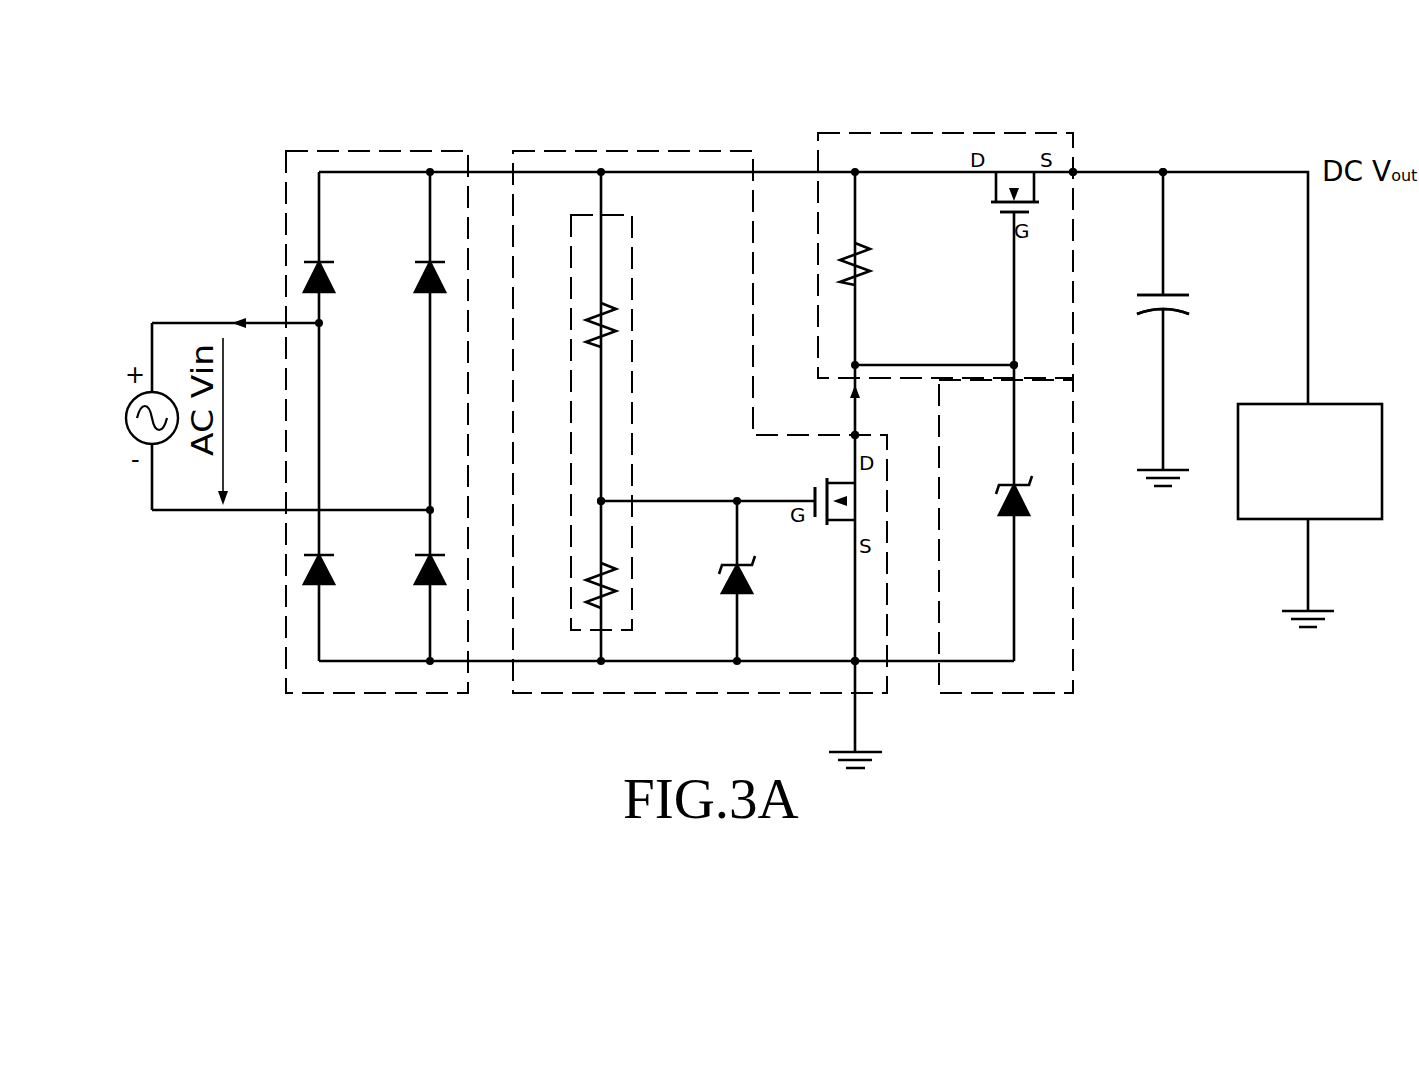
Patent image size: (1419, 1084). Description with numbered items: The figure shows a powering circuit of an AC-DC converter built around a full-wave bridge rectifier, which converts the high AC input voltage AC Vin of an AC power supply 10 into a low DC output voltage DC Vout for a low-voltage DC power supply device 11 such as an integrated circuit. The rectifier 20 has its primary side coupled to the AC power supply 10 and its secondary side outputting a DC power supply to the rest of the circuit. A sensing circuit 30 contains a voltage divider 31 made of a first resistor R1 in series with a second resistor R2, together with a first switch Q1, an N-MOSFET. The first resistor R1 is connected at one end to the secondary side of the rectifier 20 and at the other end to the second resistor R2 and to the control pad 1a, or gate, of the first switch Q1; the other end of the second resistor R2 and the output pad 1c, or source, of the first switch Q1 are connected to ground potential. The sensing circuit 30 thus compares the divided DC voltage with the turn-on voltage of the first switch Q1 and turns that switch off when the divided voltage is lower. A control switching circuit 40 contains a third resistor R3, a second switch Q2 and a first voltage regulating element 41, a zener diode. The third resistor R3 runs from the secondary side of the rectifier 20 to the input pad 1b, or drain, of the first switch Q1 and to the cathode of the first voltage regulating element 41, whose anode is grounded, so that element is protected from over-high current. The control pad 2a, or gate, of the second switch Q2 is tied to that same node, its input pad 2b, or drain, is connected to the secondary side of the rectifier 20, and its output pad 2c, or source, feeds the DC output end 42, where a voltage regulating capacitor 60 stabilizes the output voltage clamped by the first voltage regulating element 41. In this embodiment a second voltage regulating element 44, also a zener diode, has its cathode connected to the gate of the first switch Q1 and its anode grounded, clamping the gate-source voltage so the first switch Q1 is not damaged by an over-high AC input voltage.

The AC power supply 10 is at (116, 456).
The low-voltage DC power supply device 11 is at (1333, 490).
The rectifier 20 is at (401, 143).
The sensing circuit 30 is at (685, 143).
The voltage divider 31 is at (565, 218).
The control switching circuit 40 is at (1080, 530).
The first voltage regulating element 41 is at (992, 528).
The DC output end 42 is at (1163, 170).
The second voltage regulating element 44 is at (714, 591).
The voltage regulating capacitor 60 is at (1205, 302).
The first resistor R1 is at (627, 327).
The second resistor R2 is at (630, 595).
The third resistor R3 is at (895, 266).
The first switch Q1 is at (804, 479).
The second switch Q2 is at (1026, 157).
The control pad 1a is at (600, 501).
The input pad 1b is at (855, 433).
The output pad 1c is at (855, 662).
The control pad 2a is at (1014, 365).
The input pad 2b is at (855, 170).
The output pad 2c is at (1073, 172).